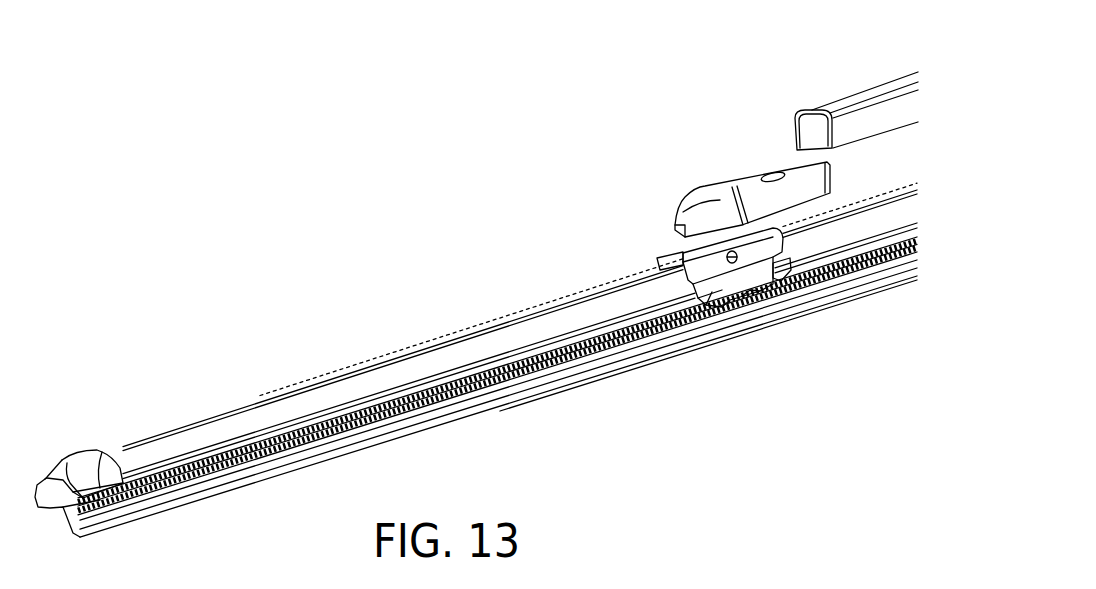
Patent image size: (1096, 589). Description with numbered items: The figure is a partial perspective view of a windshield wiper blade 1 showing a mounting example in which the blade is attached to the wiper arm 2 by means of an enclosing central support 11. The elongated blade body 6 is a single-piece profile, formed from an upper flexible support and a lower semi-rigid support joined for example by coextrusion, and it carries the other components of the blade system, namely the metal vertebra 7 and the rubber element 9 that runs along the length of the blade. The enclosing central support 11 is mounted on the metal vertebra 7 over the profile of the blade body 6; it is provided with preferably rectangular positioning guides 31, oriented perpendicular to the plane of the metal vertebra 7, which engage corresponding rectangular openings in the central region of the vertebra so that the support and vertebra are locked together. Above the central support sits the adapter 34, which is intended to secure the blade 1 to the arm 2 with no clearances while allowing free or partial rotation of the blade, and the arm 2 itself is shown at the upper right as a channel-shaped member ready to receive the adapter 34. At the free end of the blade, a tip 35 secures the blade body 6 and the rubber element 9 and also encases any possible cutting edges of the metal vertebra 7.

The blade 1 is at (190, 406).
The arm 2 is at (810, 130).
The blade body 6 is at (328, 397).
The metal vertebra 7 is at (738, 300).
The rubber element 9 is at (181, 492).
The enclosing central support 11 is at (668, 258).
The positioning guides 31 is at (783, 285).
The adapter 34 is at (747, 207).
The tips 35 is at (79, 473).